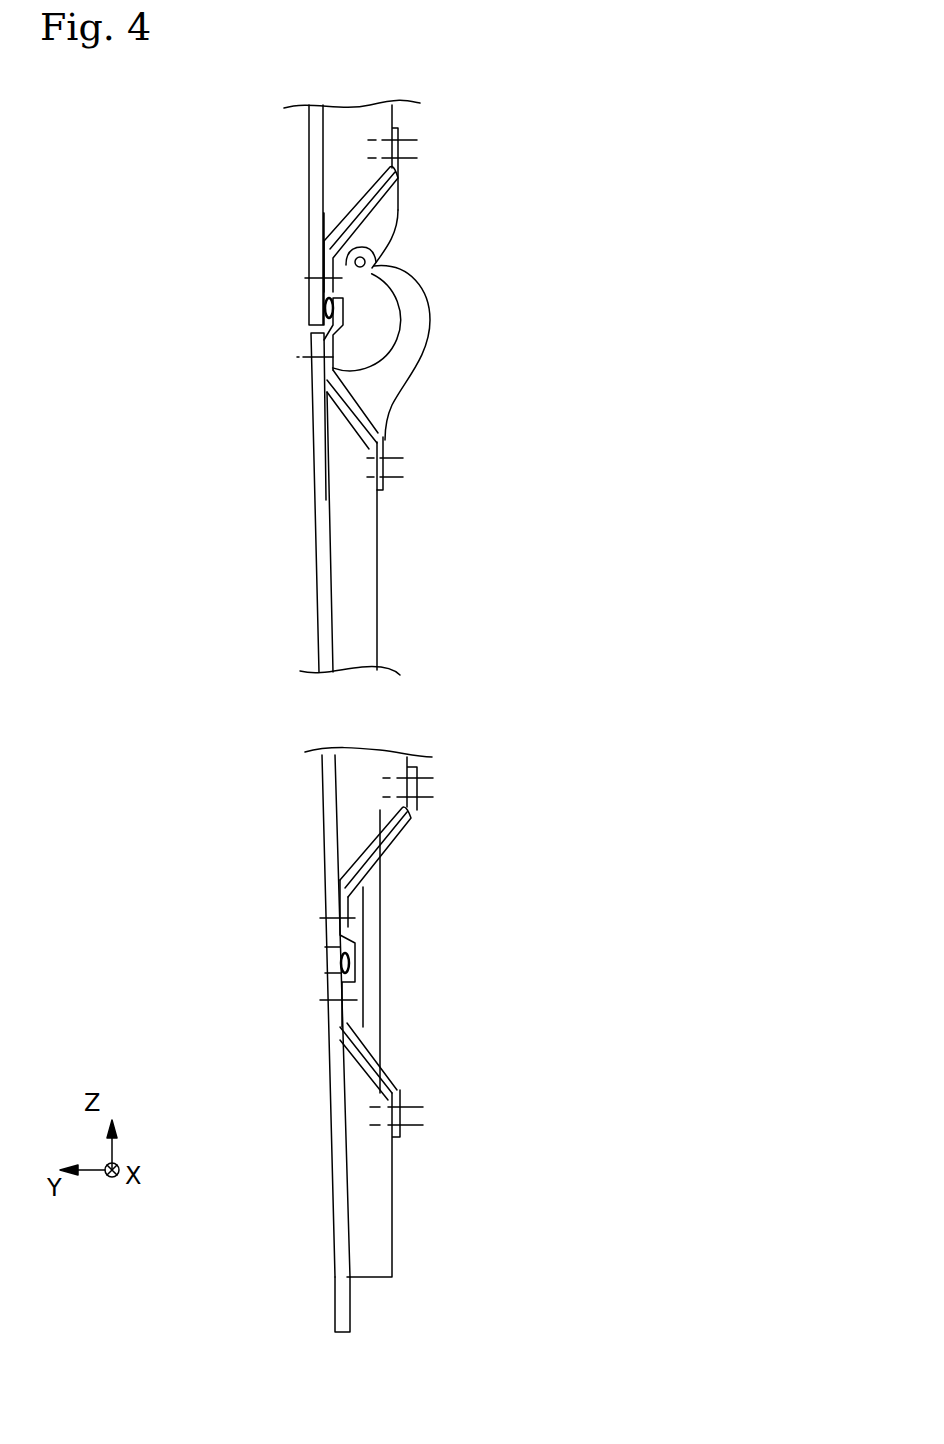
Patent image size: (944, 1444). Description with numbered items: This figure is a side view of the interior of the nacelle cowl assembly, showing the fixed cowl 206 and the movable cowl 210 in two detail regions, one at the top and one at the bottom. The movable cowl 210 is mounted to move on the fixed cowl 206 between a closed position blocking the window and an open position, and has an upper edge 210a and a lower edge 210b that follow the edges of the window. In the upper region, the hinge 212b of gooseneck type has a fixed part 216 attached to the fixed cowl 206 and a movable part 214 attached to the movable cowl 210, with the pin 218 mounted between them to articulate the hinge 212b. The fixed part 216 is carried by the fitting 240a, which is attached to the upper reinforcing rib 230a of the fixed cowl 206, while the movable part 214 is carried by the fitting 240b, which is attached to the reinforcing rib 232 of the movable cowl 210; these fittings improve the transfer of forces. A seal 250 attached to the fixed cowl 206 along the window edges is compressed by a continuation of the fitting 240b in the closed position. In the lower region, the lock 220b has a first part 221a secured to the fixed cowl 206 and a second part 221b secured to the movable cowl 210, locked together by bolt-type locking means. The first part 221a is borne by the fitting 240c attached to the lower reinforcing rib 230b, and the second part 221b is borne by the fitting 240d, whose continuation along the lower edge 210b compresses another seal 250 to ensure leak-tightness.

The fixed cowl 206 is at (317, 163).
The movable cowl 210 is at (323, 628).
The upper reinforcing rib 230a is at (387, 117).
The fixed part 216 is at (383, 223).
The pin 218 is at (366, 265).
The fitting 240a is at (345, 311).
The seal 250 is at (325, 312).
The upper edge 210a is at (307, 332).
The movable part 214 is at (378, 389).
The fitting 240b is at (390, 433).
The reinforcing rib 232 is at (362, 568).
The hinge 212b is at (590, 448).
The fitting 240d is at (392, 840).
The second part 221b is at (372, 912).
The lower edge 210b is at (342, 940).
The lock 220b is at (420, 949).
The fitting 240c is at (358, 968).
The first part 221a is at (375, 1003).
The lower reinforcing rib 230b is at (385, 1245).